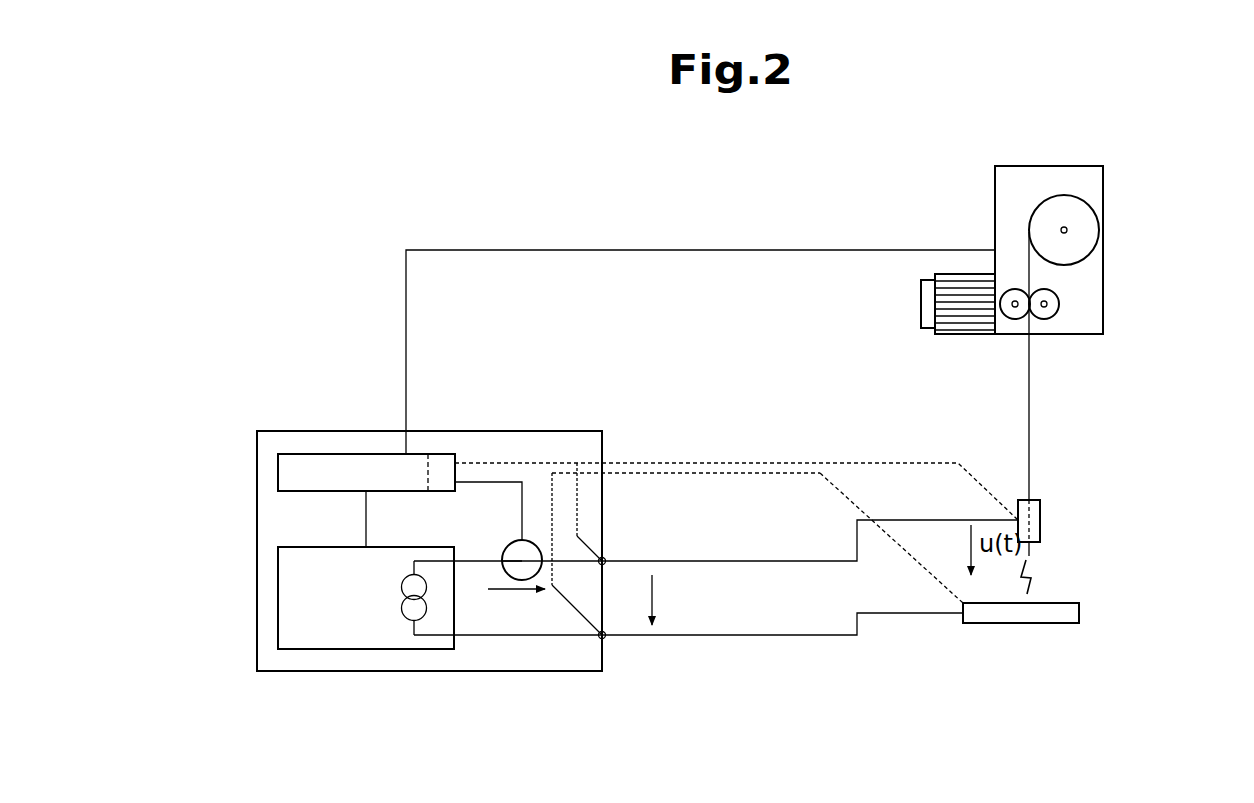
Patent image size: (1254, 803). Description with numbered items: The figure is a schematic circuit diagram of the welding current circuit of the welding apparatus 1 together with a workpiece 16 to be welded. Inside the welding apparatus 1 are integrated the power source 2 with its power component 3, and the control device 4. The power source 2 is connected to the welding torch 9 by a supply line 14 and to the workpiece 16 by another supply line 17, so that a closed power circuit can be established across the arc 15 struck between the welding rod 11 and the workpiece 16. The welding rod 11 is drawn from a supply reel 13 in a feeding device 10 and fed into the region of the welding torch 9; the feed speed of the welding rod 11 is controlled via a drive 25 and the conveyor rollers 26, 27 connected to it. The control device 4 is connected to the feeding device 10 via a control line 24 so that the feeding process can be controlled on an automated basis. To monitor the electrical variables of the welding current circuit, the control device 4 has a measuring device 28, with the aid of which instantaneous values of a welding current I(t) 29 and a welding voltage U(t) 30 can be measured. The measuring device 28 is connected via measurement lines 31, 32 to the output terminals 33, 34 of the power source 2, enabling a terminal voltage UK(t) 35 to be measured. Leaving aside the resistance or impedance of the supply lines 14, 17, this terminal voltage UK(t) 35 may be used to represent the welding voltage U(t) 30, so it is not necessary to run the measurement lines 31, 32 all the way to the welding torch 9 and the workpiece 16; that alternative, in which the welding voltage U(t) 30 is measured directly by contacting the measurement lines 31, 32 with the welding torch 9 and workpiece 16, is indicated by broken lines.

The welding apparatus 1 is at (350, 218).
The power source 2 is at (414, 608).
The power component 3 is at (307, 628).
The control device 4 is at (315, 474).
The welding torch 9 is at (1034, 520).
The feeding device 10 is at (1125, 158).
The welding rod 11 is at (1033, 410).
The supply reel 13 is at (1068, 230).
The supply line 14 is at (890, 520).
The arc 15 is at (1062, 580).
The workpiece 16 is at (1007, 608).
The supply line 17 is at (778, 637).
The control line 24 is at (672, 250).
The drive 25 is at (910, 293).
The conveyor roller 26 is at (1012, 320).
The conveyor roller 27 is at (1050, 304).
The measuring device 28 is at (438, 468).
The welding current I(t) 29 is at (507, 592).
The welding voltage U(t) 30 is at (948, 585).
The measurement line 31 is at (514, 470).
The measurement line 32 is at (560, 468).
The output terminal 33 is at (604, 558).
The output terminal 34 is at (604, 632).
The terminal voltage UK(t) 35 is at (647, 592).